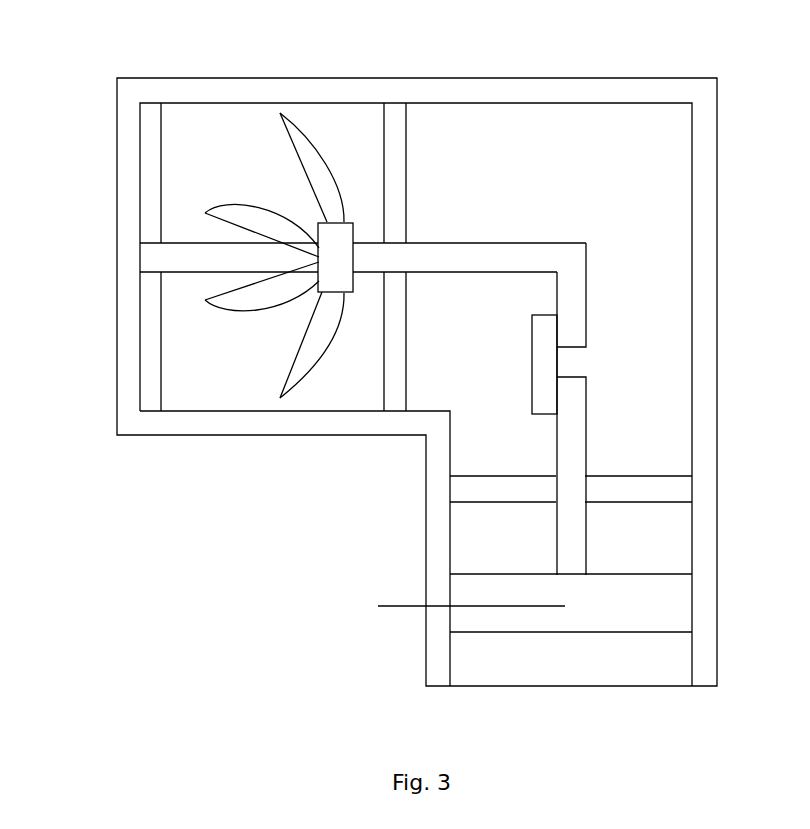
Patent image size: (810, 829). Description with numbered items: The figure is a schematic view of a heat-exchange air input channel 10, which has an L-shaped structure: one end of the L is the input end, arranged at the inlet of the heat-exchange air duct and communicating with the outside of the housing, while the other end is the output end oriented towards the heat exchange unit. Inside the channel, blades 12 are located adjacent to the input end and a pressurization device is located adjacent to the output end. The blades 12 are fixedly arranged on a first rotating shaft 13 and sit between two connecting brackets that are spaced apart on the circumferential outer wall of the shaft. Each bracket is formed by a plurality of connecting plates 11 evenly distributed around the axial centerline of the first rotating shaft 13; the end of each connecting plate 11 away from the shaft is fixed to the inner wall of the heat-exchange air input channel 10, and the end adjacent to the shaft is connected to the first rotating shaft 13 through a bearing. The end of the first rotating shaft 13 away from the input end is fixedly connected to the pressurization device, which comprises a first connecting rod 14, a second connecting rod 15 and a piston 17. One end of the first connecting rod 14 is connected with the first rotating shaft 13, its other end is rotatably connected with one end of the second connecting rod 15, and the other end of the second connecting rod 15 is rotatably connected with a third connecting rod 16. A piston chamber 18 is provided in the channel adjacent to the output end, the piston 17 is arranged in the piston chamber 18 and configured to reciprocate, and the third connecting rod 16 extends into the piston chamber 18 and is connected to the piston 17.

The heat-exchange air input channel 10 is at (497, 125).
The connecting plate 11 is at (152, 122).
The blades 12 is at (310, 157).
The first rotating shaft 13 is at (193, 254).
The first connecting rod 14 is at (578, 302).
The second connecting rod 15 is at (548, 360).
The third connecting rod 16 is at (566, 451).
The piston 17 is at (378, 606).
The piston chamber 18 is at (640, 540).